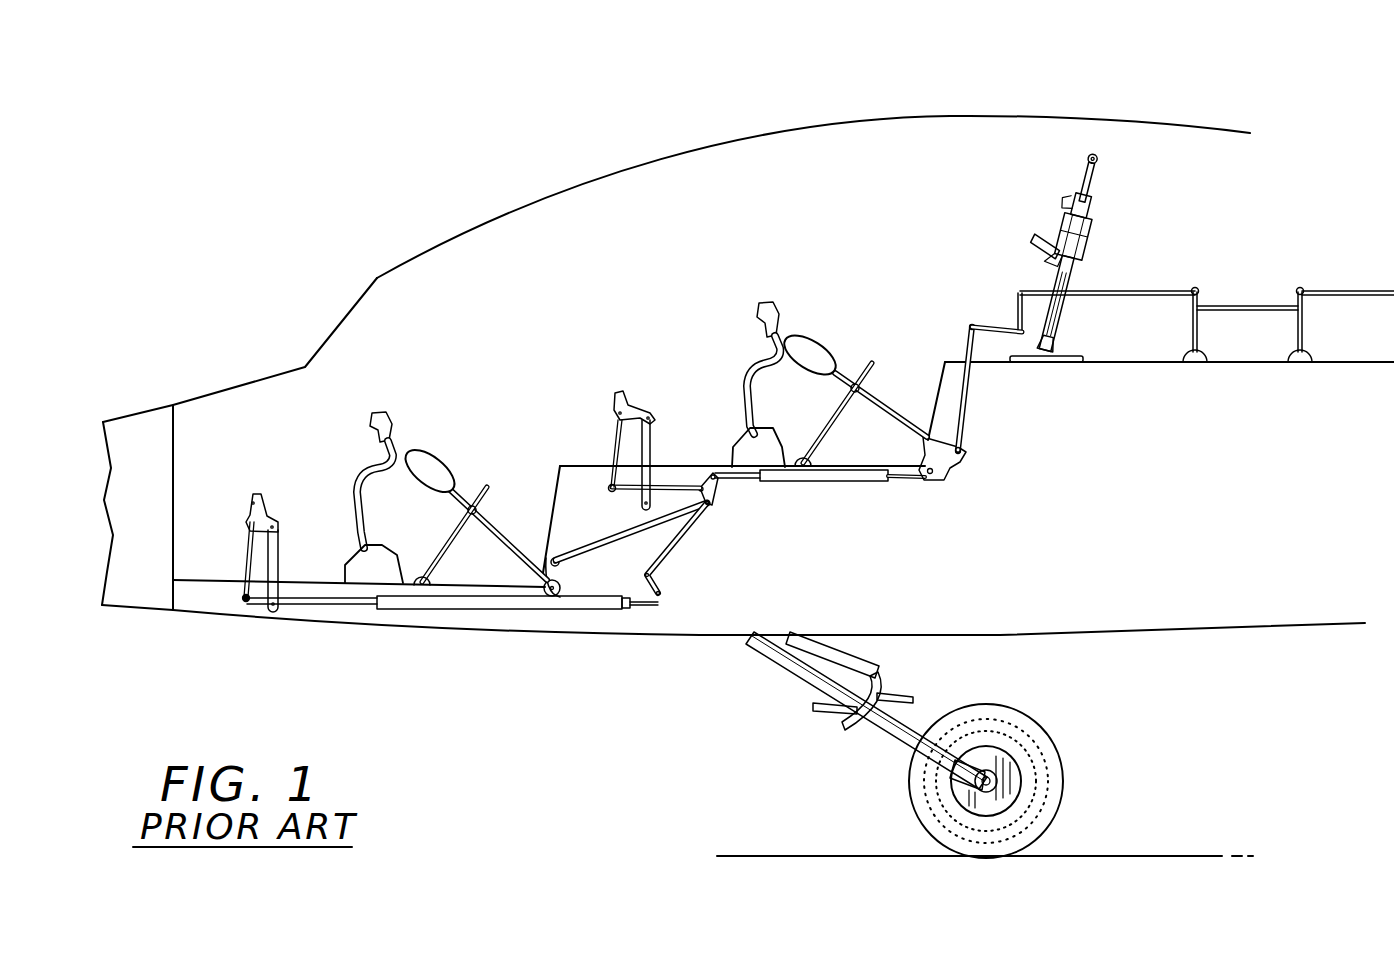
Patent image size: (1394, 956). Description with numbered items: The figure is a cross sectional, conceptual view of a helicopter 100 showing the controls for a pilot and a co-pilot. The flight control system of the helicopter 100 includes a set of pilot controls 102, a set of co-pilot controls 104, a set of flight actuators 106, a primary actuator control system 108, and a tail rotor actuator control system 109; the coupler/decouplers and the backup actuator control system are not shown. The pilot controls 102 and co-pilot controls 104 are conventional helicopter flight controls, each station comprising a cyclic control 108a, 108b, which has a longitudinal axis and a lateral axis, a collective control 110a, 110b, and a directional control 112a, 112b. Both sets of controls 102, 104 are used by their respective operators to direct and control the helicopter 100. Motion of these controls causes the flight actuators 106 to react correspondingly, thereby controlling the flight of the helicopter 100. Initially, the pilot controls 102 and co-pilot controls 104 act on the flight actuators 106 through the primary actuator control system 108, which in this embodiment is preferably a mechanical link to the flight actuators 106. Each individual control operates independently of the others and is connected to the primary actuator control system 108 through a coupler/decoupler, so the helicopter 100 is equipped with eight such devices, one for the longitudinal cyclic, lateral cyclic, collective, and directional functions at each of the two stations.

The helicopter 100 is at (183, 622).
The pilot controls 102 is at (862, 190).
The co-pilot controls 104 is at (366, 268).
The flight actuators 106 is at (1063, 230).
The primary actuator control system 108 is at (603, 610).
The cyclic control 108a is at (767, 303).
The cyclic control 108b is at (390, 415).
The tail rotor actuator control system 109 is at (1195, 288).
The collective control 110a is at (805, 338).
The collective control 110b is at (435, 452).
The directional control 112a is at (627, 392).
The directional control 112b is at (257, 495).